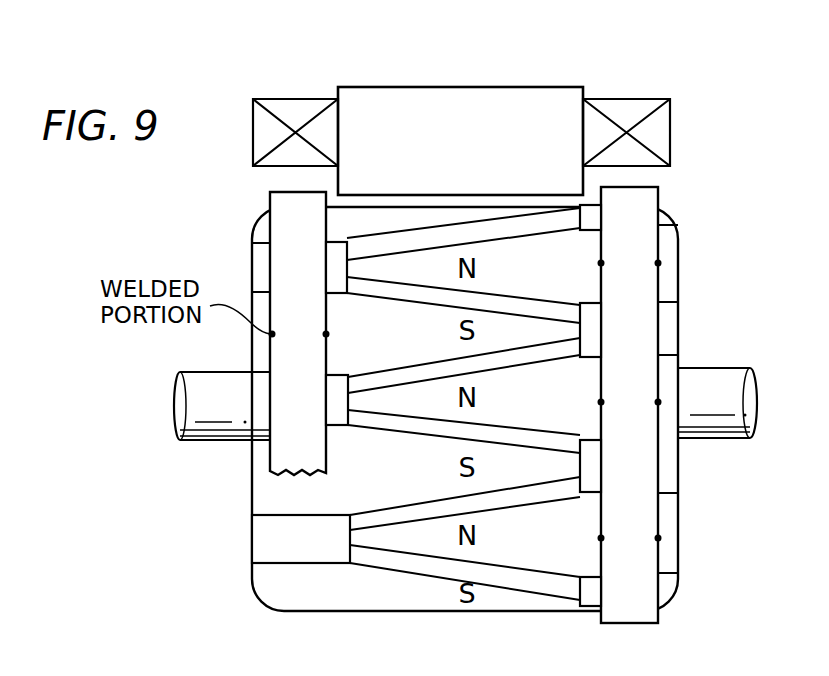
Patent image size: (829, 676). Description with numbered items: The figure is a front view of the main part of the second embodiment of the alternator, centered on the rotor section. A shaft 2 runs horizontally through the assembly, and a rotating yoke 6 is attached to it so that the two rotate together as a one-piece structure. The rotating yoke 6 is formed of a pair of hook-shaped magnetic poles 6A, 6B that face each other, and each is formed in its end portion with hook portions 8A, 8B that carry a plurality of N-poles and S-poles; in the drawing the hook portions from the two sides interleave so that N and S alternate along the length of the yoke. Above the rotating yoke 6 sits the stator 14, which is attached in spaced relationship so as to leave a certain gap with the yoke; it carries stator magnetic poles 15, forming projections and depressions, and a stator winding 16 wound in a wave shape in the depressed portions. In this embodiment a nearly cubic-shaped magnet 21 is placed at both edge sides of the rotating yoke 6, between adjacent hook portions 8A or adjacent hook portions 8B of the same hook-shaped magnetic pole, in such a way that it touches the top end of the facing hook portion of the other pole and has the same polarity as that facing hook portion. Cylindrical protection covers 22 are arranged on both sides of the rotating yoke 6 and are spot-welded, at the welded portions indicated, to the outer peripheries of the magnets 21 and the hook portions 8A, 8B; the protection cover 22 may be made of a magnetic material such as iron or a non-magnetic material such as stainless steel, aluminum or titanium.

The shaft 2 is at (735, 420).
The rotating yoke 6 is at (282, 612).
The hook-shaped magnetic pole 6A is at (668, 243).
The hook-shaped magnetic pole 6B is at (255, 495).
The hook portion 8A is at (413, 540).
The hook portion 8B is at (540, 470).
The stator 14 is at (491, 113).
The stator magnetic pole 15 is at (455, 92).
The stator winding 16 is at (665, 128).
The magnet 21 is at (255, 537).
The protection cover 22 is at (640, 290).